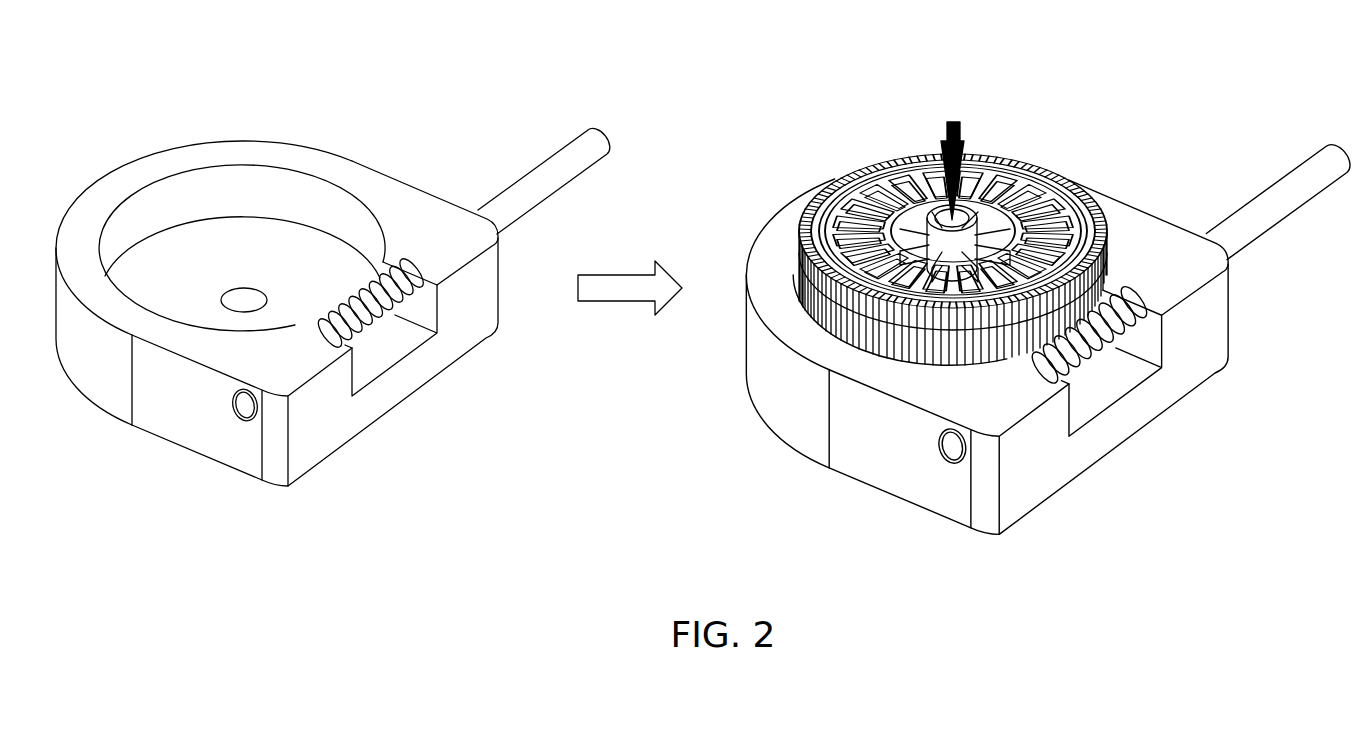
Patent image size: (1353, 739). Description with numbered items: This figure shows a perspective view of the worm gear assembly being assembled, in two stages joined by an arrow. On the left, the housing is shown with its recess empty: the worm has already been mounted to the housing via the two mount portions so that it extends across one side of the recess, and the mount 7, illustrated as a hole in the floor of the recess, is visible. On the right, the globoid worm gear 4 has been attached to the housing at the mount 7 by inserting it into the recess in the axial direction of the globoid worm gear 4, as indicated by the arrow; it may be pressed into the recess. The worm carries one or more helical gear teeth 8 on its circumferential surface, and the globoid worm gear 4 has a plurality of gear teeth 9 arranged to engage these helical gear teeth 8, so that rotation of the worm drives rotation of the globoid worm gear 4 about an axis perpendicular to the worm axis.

The globoid worm gear 4 is at (956, 231).
The mount 7 is at (247, 300).
The helical gear teeth 8 is at (1087, 370).
The gear teeth 9 is at (1093, 203).